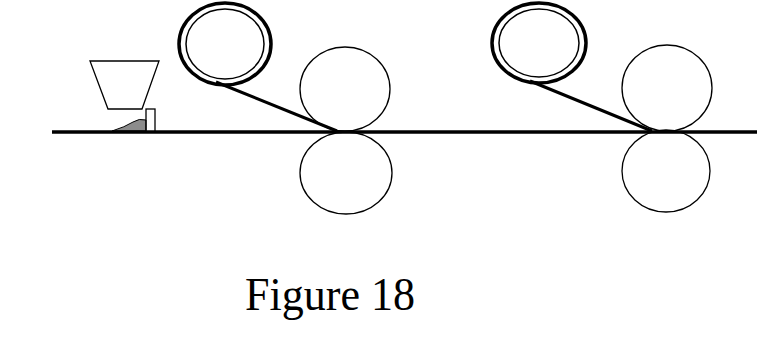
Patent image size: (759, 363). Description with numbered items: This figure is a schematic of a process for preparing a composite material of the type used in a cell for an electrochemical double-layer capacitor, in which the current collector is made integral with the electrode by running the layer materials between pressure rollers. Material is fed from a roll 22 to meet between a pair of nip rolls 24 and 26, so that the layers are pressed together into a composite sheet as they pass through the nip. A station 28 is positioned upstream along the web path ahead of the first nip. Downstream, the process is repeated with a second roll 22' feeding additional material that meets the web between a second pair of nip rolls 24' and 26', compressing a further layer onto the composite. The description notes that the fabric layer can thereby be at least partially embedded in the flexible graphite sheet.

The roll 22 is at (258, 67).
The nip roll 24 is at (345, 89).
The nip roll 26 is at (346, 173).
The adhesive/coating applicator hopper 28 is at (108, 106).
The second supply roll of web material 22' is at (572, 67).
The second upper nip roller 24' is at (667, 88).
The second lower nip roller 26' is at (666, 171).